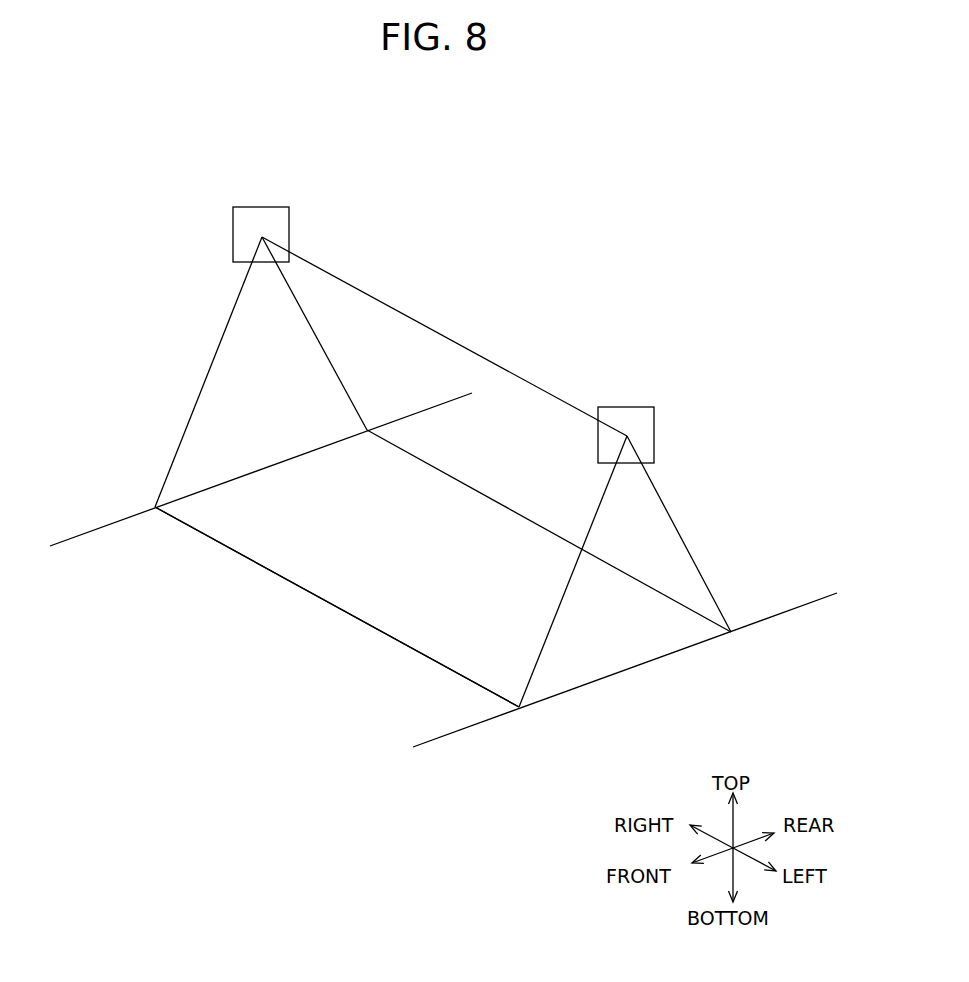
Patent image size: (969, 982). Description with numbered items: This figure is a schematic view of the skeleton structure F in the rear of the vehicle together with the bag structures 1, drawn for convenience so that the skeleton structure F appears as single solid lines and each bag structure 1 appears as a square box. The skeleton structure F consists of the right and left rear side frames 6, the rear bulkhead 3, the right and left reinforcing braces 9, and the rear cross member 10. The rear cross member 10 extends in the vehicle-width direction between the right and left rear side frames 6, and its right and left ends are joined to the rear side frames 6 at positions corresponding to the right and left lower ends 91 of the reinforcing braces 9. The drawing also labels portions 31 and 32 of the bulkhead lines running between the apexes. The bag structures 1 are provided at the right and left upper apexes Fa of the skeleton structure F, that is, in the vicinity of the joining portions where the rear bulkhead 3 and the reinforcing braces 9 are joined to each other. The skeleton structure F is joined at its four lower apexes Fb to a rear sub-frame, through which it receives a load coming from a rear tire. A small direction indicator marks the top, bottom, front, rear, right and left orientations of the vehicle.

The bag structure 1 is at (289, 225).
The rear bulkhead 3 is at (380, 632).
The first frame member 31 is at (207, 375).
The second frame member 32 is at (497, 365).
The rear side frame 6 is at (265, 469).
The reinforcing brace 9 is at (321, 343).
The lower end of reinforcing brace 91 is at (368, 429).
The rear cross member 10 is at (528, 520).
The skeleton structure F is at (456, 307).
The upper apex Fa is at (262, 236).
The lower apex Fb is at (155, 509).